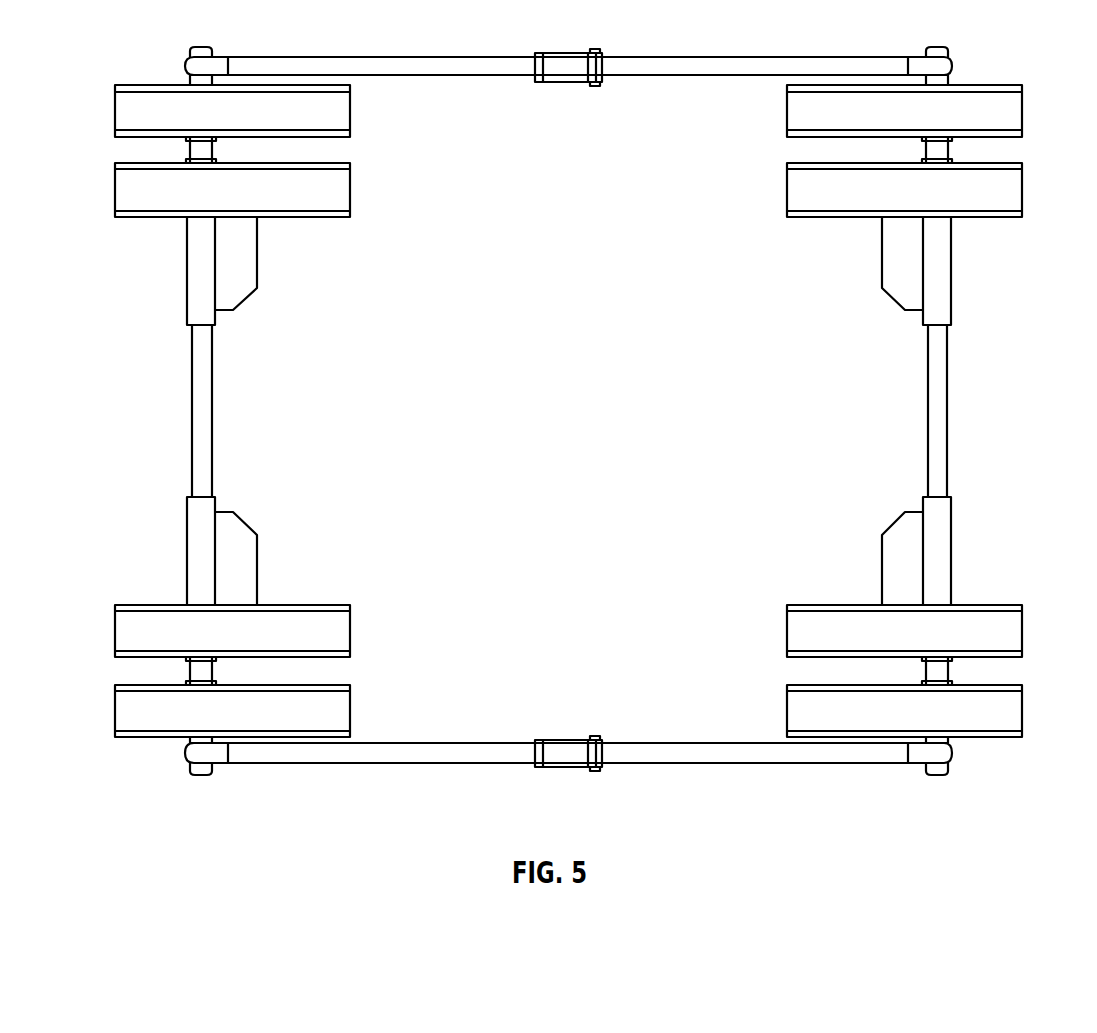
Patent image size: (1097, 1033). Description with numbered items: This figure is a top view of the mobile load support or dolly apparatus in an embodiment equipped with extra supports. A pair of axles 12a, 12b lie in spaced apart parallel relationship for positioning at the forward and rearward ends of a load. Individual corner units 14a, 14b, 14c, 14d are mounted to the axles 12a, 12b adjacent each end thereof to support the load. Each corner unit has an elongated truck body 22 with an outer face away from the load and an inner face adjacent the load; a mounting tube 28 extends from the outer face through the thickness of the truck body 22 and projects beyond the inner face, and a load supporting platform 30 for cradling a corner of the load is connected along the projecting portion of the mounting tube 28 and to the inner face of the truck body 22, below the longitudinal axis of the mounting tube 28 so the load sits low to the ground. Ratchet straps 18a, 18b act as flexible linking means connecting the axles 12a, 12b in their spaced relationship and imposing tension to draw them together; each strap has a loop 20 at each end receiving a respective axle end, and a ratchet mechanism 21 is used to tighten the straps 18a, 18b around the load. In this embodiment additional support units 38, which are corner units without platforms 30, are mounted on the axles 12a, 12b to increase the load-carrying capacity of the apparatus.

The axle 12a is at (197, 408).
The axle 12b is at (940, 392).
The corner unit 14a is at (147, 590).
The corner unit 14b is at (150, 228).
The corner unit 14c is at (991, 224).
The corner unit 14d is at (991, 590).
The ratchet strap 18a is at (470, 764).
The ratchet strap 18b is at (643, 57).
The loop 20 is at (190, 752).
The ratchet mechanism 21 is at (565, 65).
The truck body 22 is at (125, 188).
The mounting tube 28 is at (187, 278).
The load supporting platform 30 is at (247, 250).
The support unit 38 is at (115, 110).